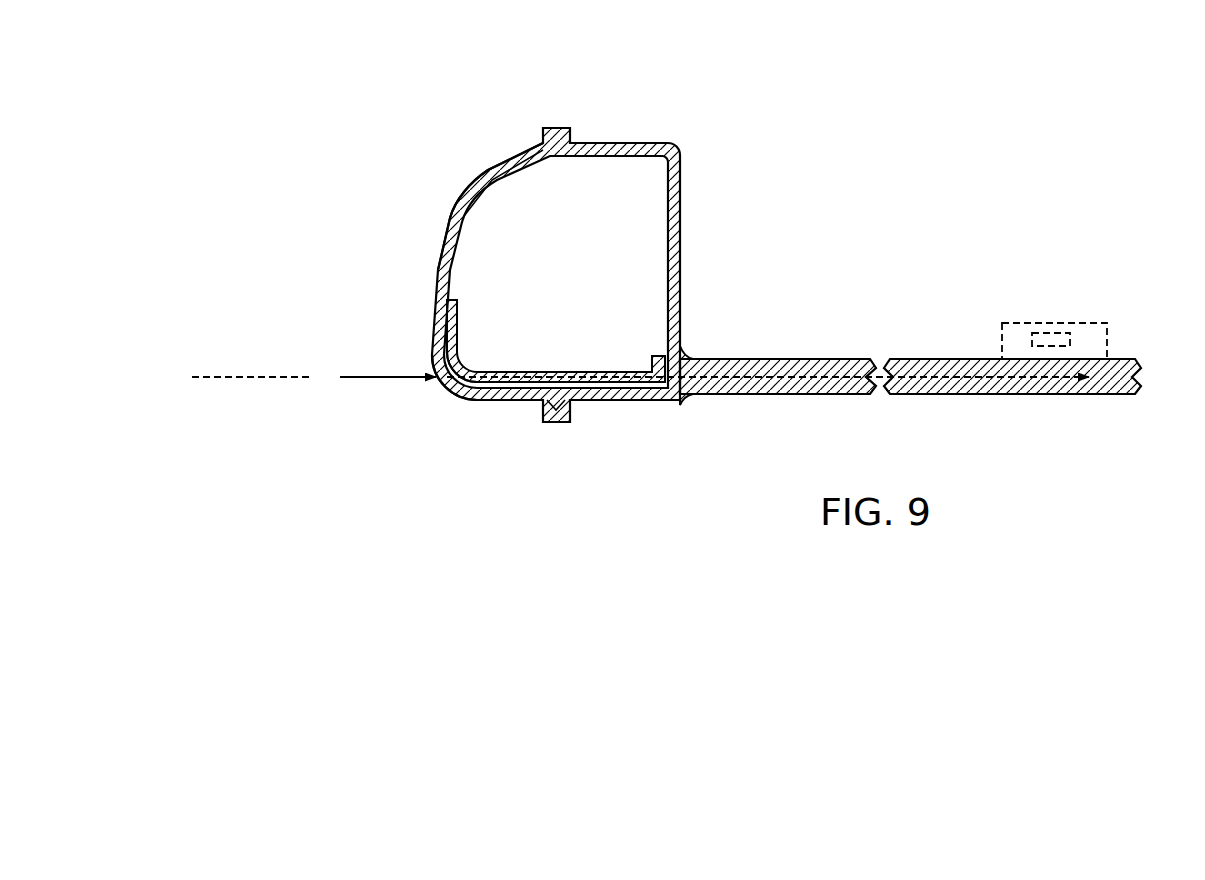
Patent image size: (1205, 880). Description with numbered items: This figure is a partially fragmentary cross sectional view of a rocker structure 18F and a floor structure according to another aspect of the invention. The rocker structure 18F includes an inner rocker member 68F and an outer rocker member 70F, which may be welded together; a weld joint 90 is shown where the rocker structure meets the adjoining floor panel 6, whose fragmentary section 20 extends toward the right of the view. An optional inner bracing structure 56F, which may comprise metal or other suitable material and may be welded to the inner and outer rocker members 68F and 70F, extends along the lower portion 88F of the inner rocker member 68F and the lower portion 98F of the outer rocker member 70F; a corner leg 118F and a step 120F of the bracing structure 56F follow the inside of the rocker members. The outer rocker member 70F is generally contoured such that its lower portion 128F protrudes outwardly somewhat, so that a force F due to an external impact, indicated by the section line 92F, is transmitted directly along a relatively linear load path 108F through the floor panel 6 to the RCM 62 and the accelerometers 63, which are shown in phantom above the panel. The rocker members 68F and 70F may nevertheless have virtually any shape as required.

The rocker structure 18F is at (487, 168).
The inner rocker member 68F is at (627, 140).
The outer rocker member 70F is at (447, 217).
The lower portion 128F is at (430, 337).
The section line F 92F is at (250, 377).
The inner sheet corner leg 118F is at (455, 345).
The inner bracing structure 56F is at (558, 370).
The inner sheet step 120F is at (655, 358).
The lower portion of outer rocker member 98F is at (487, 402).
The lower portion of inner rocker member 88F is at (618, 402).
The weld / fillet joint 90 is at (690, 352).
The panel 6 is at (815, 395).
The panel section 20 is at (930, 395).
The load path 108F is at (810, 364).
The RCM 62 is at (1070, 323).
The accelerometers 63 is at (1070, 338).